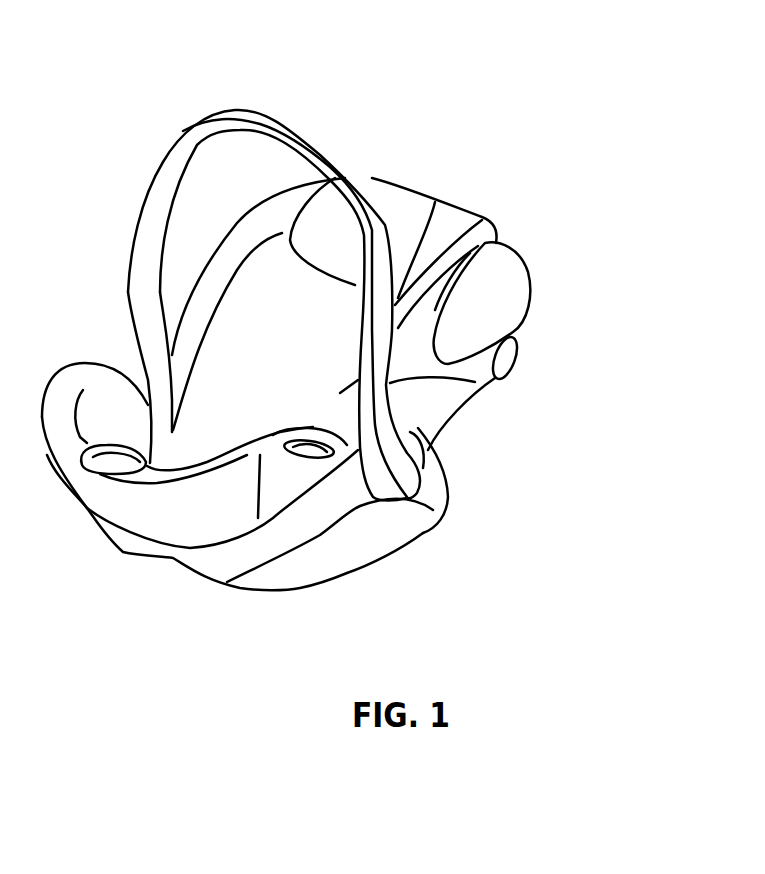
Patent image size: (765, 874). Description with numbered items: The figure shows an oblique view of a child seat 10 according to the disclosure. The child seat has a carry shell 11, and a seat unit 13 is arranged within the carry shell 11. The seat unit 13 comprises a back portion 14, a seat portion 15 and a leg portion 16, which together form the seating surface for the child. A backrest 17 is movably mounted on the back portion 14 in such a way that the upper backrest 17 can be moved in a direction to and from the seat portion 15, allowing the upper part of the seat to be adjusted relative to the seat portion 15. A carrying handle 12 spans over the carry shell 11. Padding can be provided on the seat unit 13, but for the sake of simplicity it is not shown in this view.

The child car seat 10 is at (560, 232).
The carry shell 11 is at (423, 550).
The carrying handle 12 is at (279, 122).
The seat unit 13 is at (253, 297).
The back portion 14 is at (437, 416).
The seat portion 15 is at (203, 432).
The leg portion 16 is at (146, 542).
The backrest 17 is at (358, 355).